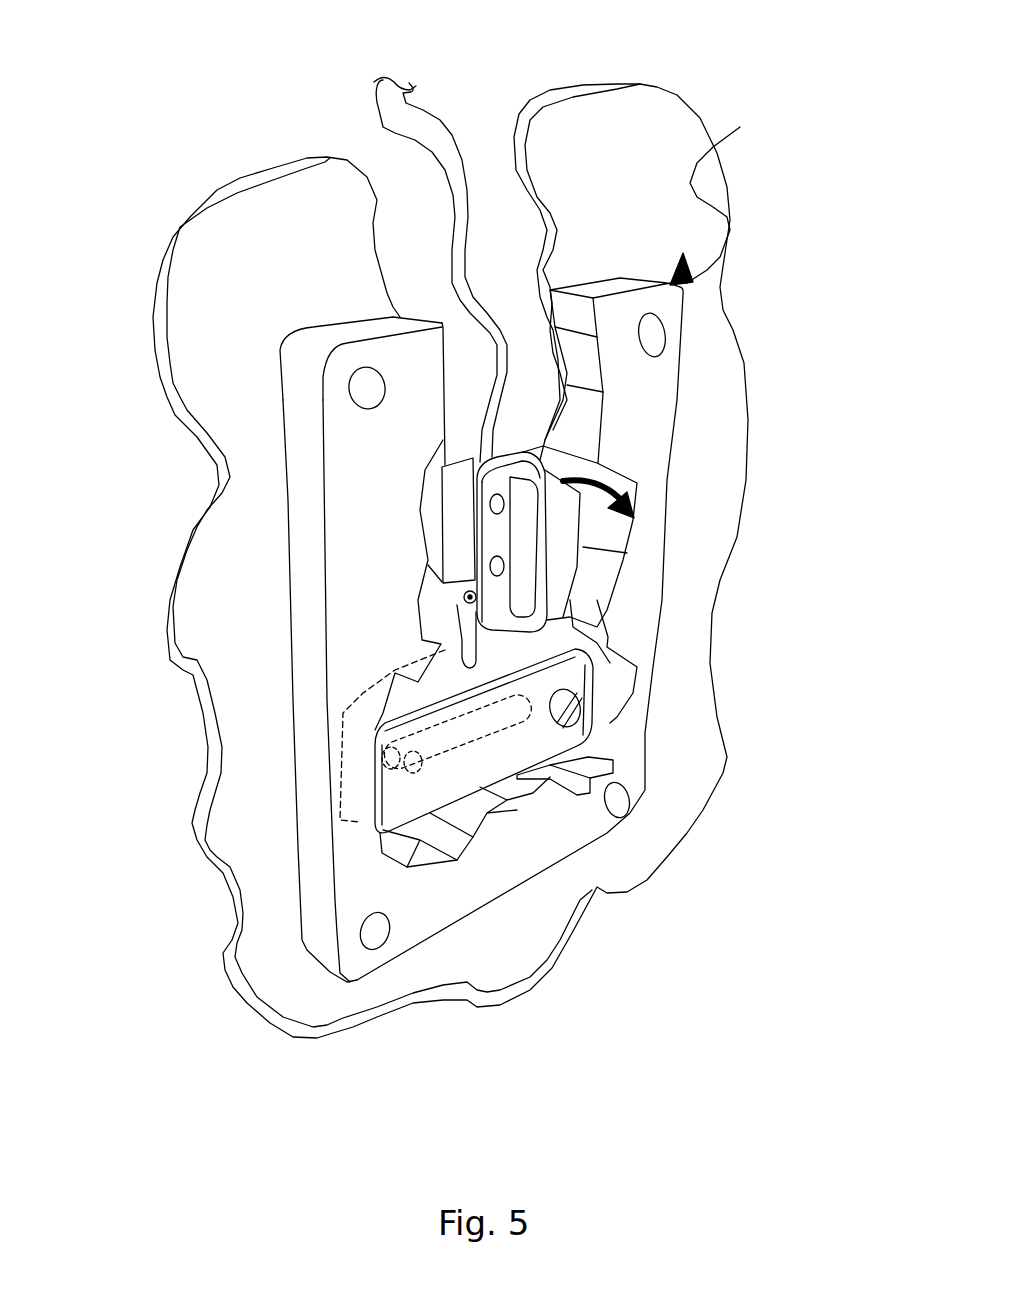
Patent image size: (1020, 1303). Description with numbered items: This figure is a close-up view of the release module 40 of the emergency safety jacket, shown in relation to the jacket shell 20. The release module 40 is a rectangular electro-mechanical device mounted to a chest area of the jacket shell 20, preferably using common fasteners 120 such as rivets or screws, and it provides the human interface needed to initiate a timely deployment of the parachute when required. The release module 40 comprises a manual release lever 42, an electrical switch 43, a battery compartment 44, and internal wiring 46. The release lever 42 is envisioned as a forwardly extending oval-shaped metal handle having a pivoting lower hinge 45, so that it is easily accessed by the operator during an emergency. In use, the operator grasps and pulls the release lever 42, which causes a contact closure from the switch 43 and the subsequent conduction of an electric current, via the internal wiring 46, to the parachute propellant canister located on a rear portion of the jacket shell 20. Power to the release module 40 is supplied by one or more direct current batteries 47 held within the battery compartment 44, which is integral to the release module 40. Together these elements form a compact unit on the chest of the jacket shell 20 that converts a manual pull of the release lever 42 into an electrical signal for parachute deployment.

The jacket shell 20 is at (232, 243).
The release module 40 is at (740, 127).
The manual release lever 42 is at (547, 467).
The electrical switch 43 is at (455, 492).
The battery compartment 44 is at (577, 680).
The pivoting lower hinge 45 is at (466, 595).
The internal wiring 46 is at (460, 195).
The direct current (DC) batteries 47 is at (464, 748).
The common fasteners 120 is at (363, 387).